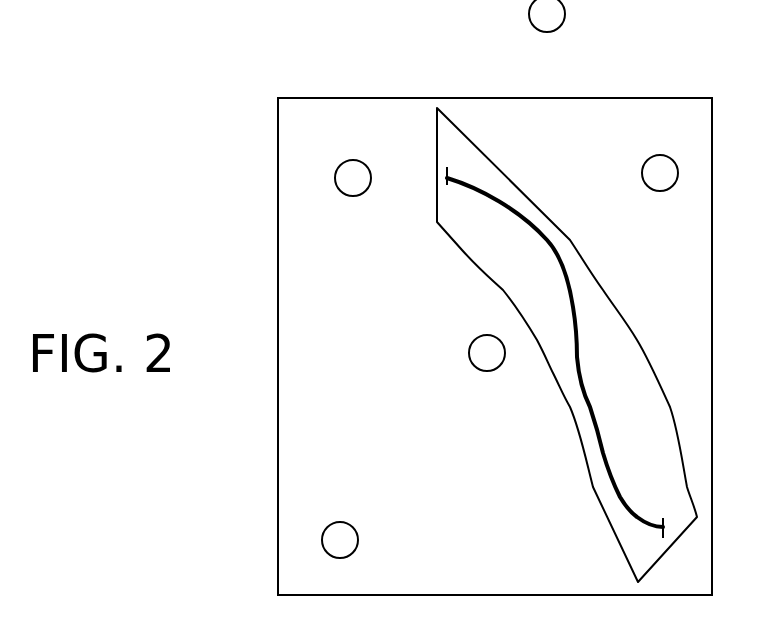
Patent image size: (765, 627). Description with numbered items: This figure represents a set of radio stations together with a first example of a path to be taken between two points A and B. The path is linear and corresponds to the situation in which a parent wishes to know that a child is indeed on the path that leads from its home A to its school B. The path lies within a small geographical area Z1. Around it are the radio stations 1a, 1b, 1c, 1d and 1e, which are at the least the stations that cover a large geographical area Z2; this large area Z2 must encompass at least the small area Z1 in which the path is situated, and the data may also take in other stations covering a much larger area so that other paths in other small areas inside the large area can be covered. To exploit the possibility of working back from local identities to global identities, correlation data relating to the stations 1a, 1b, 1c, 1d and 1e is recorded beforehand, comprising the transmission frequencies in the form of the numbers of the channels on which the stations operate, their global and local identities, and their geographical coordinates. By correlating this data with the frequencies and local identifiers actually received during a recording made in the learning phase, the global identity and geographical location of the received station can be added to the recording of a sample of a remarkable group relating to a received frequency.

The radio station 1a is at (353, 195).
The radio station 1b is at (487, 368).
The radio station 1c is at (356, 540).
The radio station 1d is at (660, 191).
The radio station 1e is at (547, 31).
The starting point A is at (449, 161).
The end point B is at (662, 512).
The small geographical area Z1 is at (650, 457).
The large geographical area Z2 is at (497, 510).